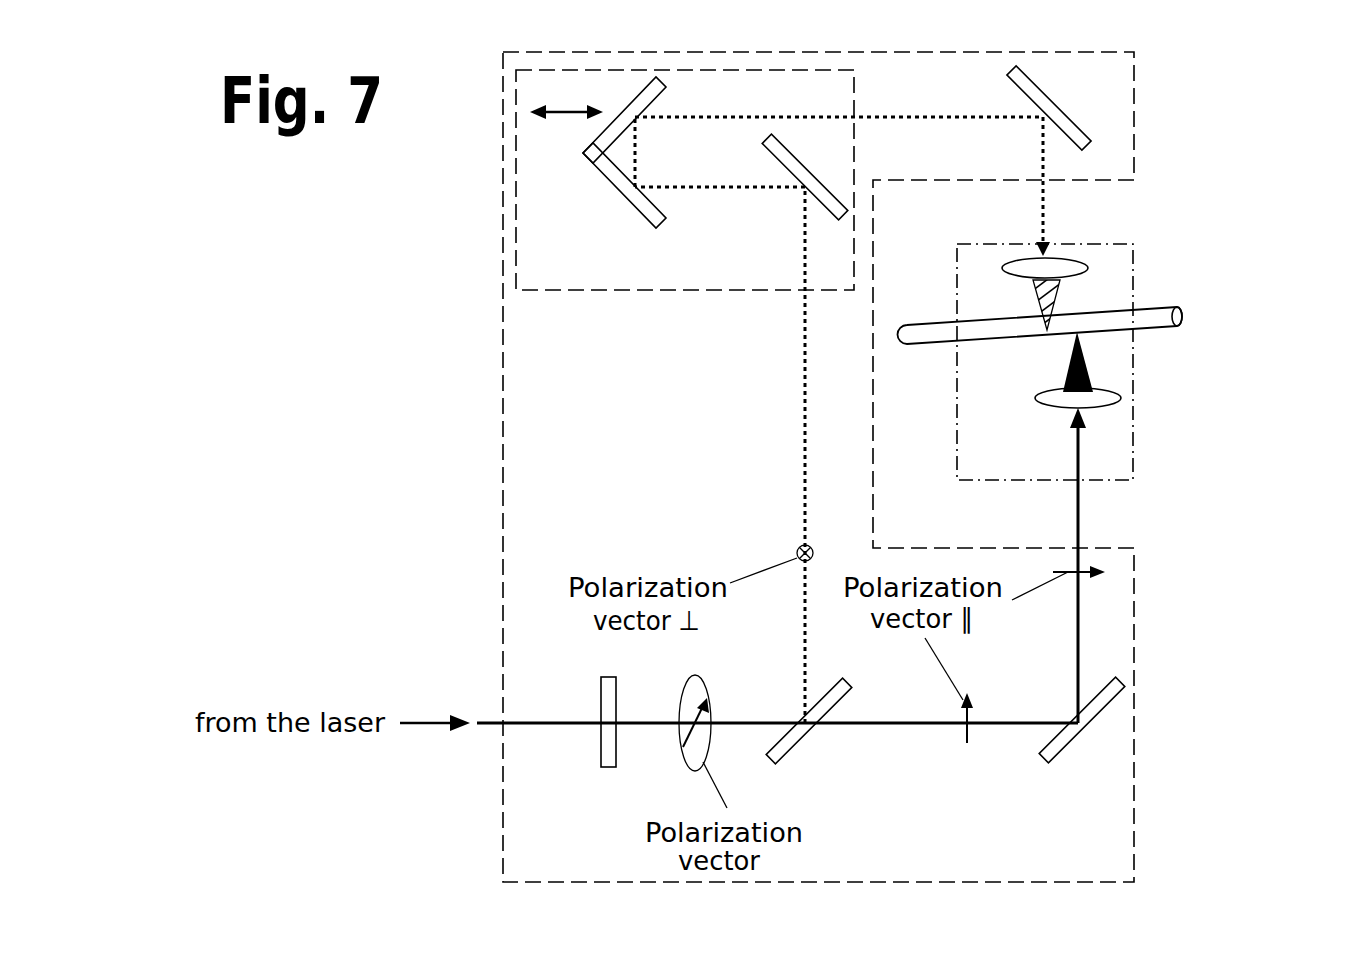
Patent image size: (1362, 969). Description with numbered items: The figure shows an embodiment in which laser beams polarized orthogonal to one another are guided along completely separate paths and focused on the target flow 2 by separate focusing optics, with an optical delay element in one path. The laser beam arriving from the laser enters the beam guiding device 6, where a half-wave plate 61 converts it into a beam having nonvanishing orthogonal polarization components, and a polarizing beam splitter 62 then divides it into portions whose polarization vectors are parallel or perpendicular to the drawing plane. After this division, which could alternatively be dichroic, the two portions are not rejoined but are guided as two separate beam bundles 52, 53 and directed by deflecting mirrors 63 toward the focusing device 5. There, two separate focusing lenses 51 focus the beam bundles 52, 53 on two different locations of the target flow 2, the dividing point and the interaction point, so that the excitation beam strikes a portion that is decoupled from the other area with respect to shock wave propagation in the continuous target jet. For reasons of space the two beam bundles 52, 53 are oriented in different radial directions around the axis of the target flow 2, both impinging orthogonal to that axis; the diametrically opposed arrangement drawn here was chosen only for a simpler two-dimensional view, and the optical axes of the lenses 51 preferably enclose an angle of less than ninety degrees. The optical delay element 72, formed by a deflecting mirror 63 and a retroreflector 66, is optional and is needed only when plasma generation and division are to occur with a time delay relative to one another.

The target flow 2 is at (1157, 307).
The focusing device 5 is at (1115, 362).
The beam guiding device 6 is at (1134, 110).
The focusing lens 51 is at (1045, 369).
The beam bundle 52 is at (1073, 497).
The beam bundle 53 is at (1038, 200).
The half-wave plate 61 is at (608, 758).
The polarizing beam splitter 62 is at (813, 732).
The deflecting mirror 63 is at (782, 158).
The retroreflector 66 is at (610, 163).
The optical delay element 72 is at (688, 290).